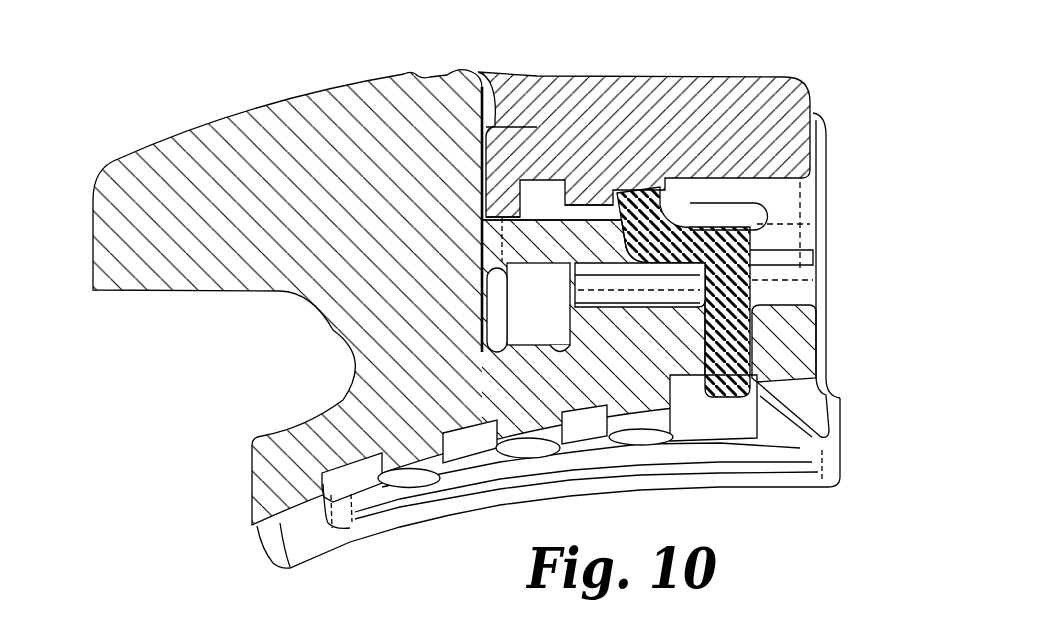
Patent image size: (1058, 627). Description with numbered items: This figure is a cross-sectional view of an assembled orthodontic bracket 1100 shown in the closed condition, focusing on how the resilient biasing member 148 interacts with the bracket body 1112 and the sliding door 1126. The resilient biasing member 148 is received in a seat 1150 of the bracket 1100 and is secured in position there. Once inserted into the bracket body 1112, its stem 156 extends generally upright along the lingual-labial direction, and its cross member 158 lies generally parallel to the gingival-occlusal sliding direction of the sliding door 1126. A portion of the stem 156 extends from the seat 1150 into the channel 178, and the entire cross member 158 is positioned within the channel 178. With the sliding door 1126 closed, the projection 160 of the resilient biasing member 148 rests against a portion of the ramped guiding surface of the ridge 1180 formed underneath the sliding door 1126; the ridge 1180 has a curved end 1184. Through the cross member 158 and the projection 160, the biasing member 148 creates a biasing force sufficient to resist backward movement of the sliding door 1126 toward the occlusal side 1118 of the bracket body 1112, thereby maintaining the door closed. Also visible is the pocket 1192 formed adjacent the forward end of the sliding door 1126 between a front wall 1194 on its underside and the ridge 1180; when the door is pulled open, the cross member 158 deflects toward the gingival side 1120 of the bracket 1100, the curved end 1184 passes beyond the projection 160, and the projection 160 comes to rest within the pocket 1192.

The bracket 1100 is at (152, 62).
The bracket body 1112 is at (304, 95).
The pocket 1192 is at (538, 186).
The projection 160 is at (637, 187).
The sliding door 1126 is at (700, 127).
The resilient biasing member 148 is at (692, 206).
The cross member 158 is at (789, 236).
The channel 178 is at (799, 233).
The stem 156 is at (755, 283).
The occlusal side 1118 is at (868, 335).
The front wall 1194 is at (566, 209).
The curved end 1184 is at (539, 262).
The ridge 1180 is at (565, 217).
The seat 1150 is at (824, 441).
The gingival side 1120 is at (200, 465).